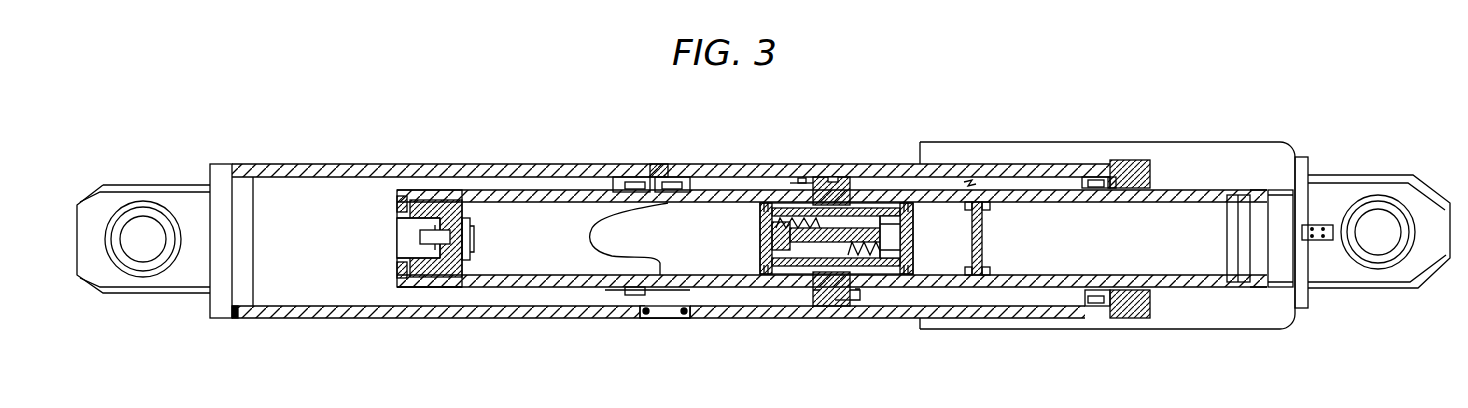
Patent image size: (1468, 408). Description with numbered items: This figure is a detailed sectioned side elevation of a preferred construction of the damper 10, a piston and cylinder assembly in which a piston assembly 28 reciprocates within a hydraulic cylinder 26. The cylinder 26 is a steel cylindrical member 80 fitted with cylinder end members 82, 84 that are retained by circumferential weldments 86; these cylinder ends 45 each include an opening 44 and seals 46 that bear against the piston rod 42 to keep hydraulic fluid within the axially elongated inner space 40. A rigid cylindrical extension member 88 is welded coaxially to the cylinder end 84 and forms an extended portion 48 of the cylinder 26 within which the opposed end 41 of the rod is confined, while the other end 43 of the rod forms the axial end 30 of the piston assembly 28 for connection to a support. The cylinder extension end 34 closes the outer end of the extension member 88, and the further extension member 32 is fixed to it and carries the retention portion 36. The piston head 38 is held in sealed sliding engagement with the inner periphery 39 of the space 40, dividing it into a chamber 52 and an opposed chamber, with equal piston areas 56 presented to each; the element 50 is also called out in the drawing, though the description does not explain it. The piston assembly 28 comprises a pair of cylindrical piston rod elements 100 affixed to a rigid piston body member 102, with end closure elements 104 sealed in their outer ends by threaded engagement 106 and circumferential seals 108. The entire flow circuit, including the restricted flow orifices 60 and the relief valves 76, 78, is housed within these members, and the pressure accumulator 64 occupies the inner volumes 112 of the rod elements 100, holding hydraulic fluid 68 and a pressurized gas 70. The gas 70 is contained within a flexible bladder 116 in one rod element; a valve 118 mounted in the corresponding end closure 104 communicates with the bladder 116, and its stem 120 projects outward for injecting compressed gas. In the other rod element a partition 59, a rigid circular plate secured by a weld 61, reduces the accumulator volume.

The damper 10 is at (922, 330).
The hydraulic cylinder 26 is at (512, 164).
The piston assembly 28 is at (712, 197).
The axial end of piston assembly 30 is at (1206, 189).
The extension member 32 is at (156, 188).
The cylinder extension end 34 is at (211, 166).
The retention portion 36 is at (126, 206).
The piston head 38 is at (842, 198).
The inner periphery 39 is at (937, 176).
The inner space 40 is at (968, 180).
The opposed end of piston rod 41 is at (470, 284).
The piston rod 42 is at (718, 288).
The end of piston rod 43 is at (1047, 280).
The opening 44 is at (646, 171).
The cylinder end 45 is at (1152, 166).
The seal 46 is at (615, 200).
The extended portion of cylinder 48 is at (283, 165).
The valve 50 is at (848, 292).
The chamber 52 is at (794, 178).
The piston area 56 is at (820, 289).
The partition 59 is at (983, 250).
The restricted flow orifice 60 is at (775, 242).
The weld 61 is at (986, 204).
The pressure accumulator 64 is at (532, 258).
The hydraulic fluid 68 is at (703, 262).
The pressurized gas 70 is at (520, 266).
The pressure relief valve 76 is at (913, 249).
The relief valve 78 is at (766, 223).
The cylindrical member 80 is at (902, 165).
The cylinder end member 82 is at (1133, 163).
The cylinder end member 84 is at (670, 178).
The circumferential weldment 86 is at (223, 318).
The cylindrical extension member 88 is at (411, 165).
The piston rod element 100 is at (562, 288).
The piston body member 102 is at (843, 300).
The end closure element 104 is at (440, 268).
The threaded engagement 106 is at (1273, 192).
The circumferential seal 108 is at (1265, 188).
The inner volume 112 is at (716, 232).
The flexible bladder 116 is at (597, 226).
The valve 118 is at (466, 232).
The stem 120 is at (438, 233).